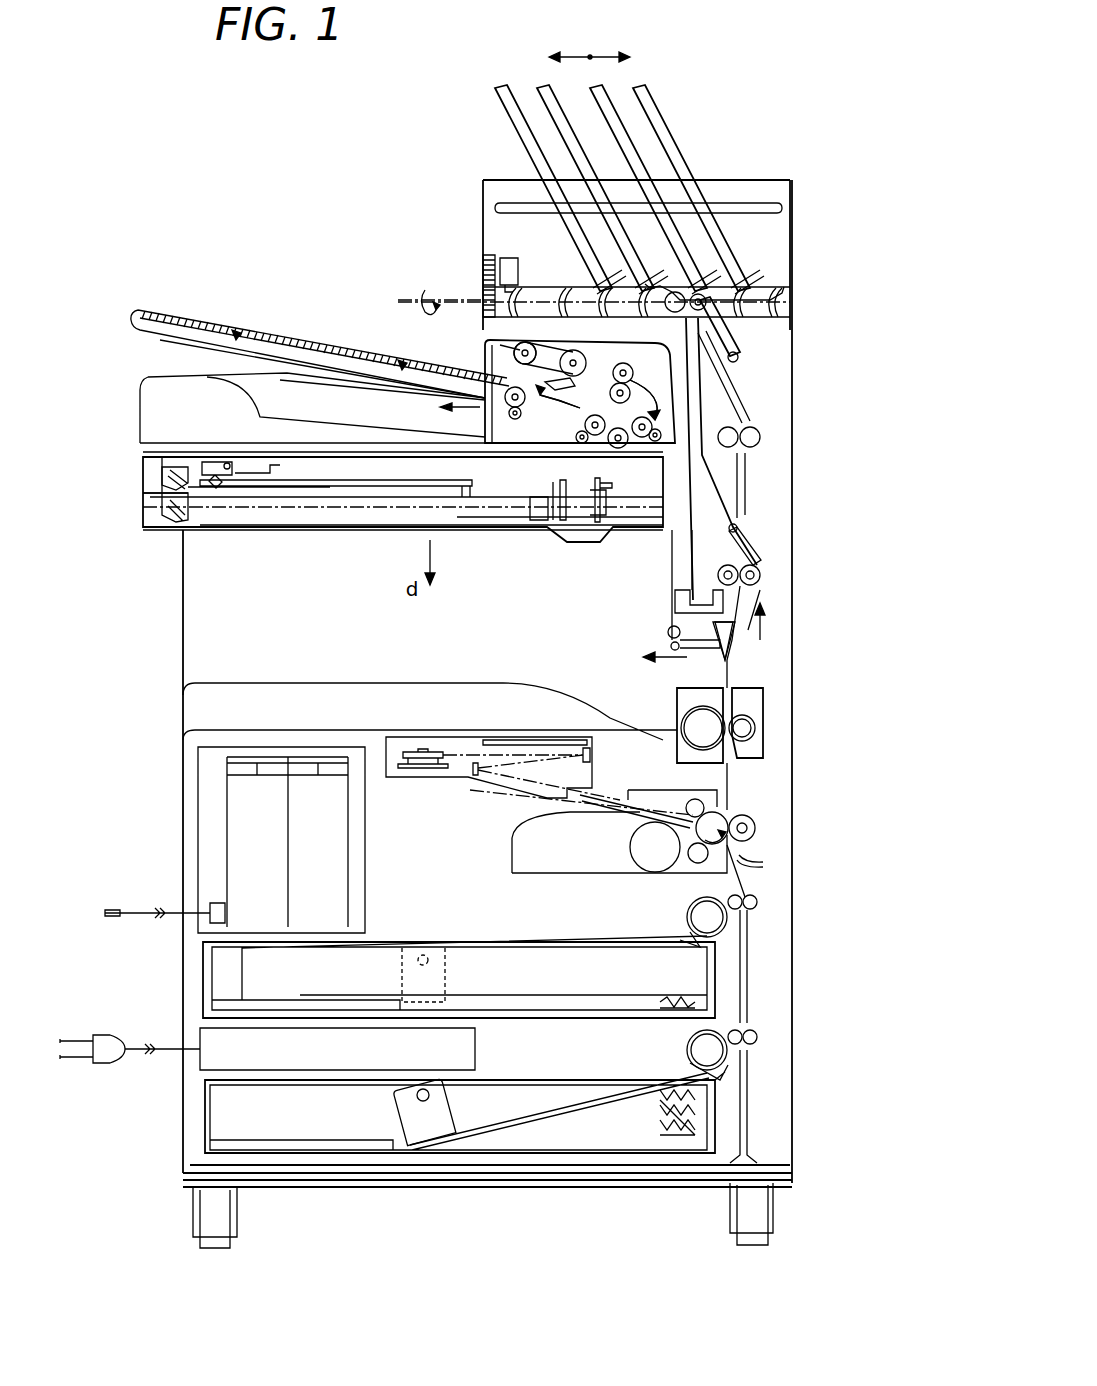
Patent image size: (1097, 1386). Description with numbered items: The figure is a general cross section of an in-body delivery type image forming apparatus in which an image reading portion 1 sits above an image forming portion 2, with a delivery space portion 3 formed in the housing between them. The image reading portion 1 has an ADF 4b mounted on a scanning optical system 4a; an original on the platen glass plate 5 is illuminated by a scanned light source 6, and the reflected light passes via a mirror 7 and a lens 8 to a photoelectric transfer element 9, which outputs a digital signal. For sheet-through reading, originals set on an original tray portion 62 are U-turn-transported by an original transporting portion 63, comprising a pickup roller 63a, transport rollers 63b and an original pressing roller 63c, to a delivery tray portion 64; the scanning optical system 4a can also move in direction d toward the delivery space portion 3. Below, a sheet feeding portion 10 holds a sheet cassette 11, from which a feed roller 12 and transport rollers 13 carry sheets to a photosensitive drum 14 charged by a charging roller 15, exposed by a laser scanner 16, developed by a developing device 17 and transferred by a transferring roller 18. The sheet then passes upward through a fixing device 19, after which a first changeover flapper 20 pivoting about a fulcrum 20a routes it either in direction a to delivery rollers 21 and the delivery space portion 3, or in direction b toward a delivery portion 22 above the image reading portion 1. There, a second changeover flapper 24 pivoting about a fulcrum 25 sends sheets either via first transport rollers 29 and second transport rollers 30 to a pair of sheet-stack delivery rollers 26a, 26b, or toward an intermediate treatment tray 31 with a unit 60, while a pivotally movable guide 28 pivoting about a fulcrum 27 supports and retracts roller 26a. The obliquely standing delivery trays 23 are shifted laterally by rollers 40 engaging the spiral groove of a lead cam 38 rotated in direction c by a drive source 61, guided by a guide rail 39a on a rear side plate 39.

The image reading portion 1 is at (145, 515).
The image forming portion 2 is at (198, 797).
The delivery space portion 3 is at (205, 640).
The scanning optical system 4a is at (148, 480).
The ADF 4b is at (150, 398).
The platen glass plate 5 is at (480, 460).
The light source 6 is at (222, 465).
The mirror 7 is at (170, 470).
The lens 8 is at (552, 497).
The photoelectric transfer element 9 is at (600, 500).
The sheet feeding portion 10 is at (190, 1127).
The sheet cassette 11 is at (572, 1010).
The feed roller 12 is at (695, 917).
The transport rollers 13 is at (757, 905).
The photosensitive drum 14 is at (717, 820).
The charging roller 15 is at (688, 805).
The laser scanner 16 is at (482, 782).
The developing device 17 is at (693, 860).
The transferring roller 18 is at (755, 828).
The fixing device 19 is at (757, 716).
The first changeover flapper 20 is at (667, 632).
The fulcrum 20a is at (700, 612).
The delivery rollers 21 is at (668, 622).
The delivery portion 22 is at (720, 180).
The delivery trays 23 is at (542, 107).
The second changeover flapper 24 is at (760, 550).
The fulcrum 25 is at (738, 528).
The sheet-stack delivery roller 26a is at (790, 302).
The sheet-stack delivery roller 26b is at (672, 293).
The fulcrum 27 is at (738, 357).
The pivotally movable guide 28 is at (735, 326).
The first transport rollers 29 is at (760, 578).
The second transport rollers 30 is at (760, 437).
The intermediate treatment tray 31 is at (703, 487).
The lead cam 38 is at (505, 265).
The rear side plate 39 is at (773, 232).
The guide rail 39a is at (750, 203).
The rollers 40 is at (750, 285).
The unit 60 is at (745, 600).
The drive source 61 is at (488, 268).
The original tray portion 62 is at (178, 302).
The original transporting portion 63 is at (470, 345).
The pickup roller 63a is at (523, 345).
The transport rollers 63b is at (580, 422).
The original pressing roller 63c is at (700, 458).
The delivery tray portion 64 is at (310, 420).